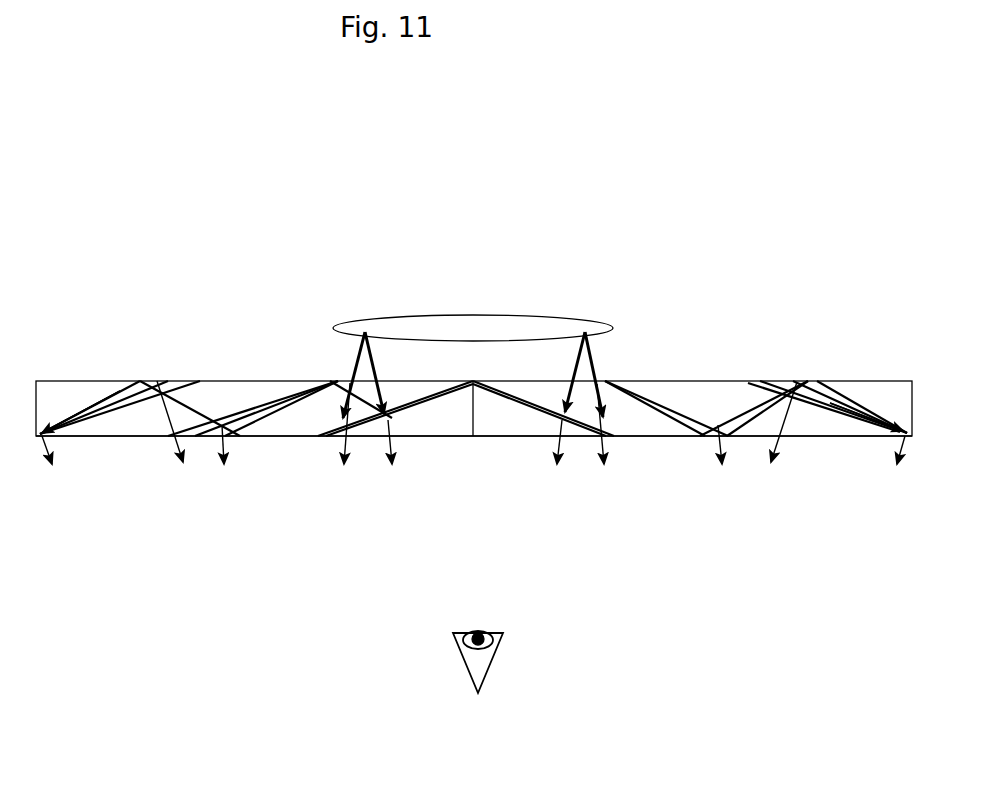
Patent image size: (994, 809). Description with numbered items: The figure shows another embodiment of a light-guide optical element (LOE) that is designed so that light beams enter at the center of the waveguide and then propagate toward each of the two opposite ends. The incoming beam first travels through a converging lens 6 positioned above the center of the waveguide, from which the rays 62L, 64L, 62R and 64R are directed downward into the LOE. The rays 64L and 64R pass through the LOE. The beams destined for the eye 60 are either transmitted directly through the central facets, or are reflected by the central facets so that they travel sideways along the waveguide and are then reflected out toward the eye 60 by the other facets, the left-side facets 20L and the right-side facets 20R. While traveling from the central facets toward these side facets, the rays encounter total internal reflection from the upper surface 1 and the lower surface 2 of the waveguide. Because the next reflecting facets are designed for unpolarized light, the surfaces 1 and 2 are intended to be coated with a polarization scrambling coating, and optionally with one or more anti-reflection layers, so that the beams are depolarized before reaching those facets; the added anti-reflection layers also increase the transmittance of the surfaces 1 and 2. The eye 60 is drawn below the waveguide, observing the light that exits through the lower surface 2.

The surface 1 is at (231, 377).
The surface 2 is at (669, 442).
The converging lens 6 is at (473, 328).
The ray 62L is at (357, 378).
The ray 64L is at (382, 360).
The ray 62R is at (577, 360).
The ray 64R is at (592, 355).
The facets 20L is at (141, 422).
The facets 20R is at (813, 418).
The eye 60 is at (460, 660).